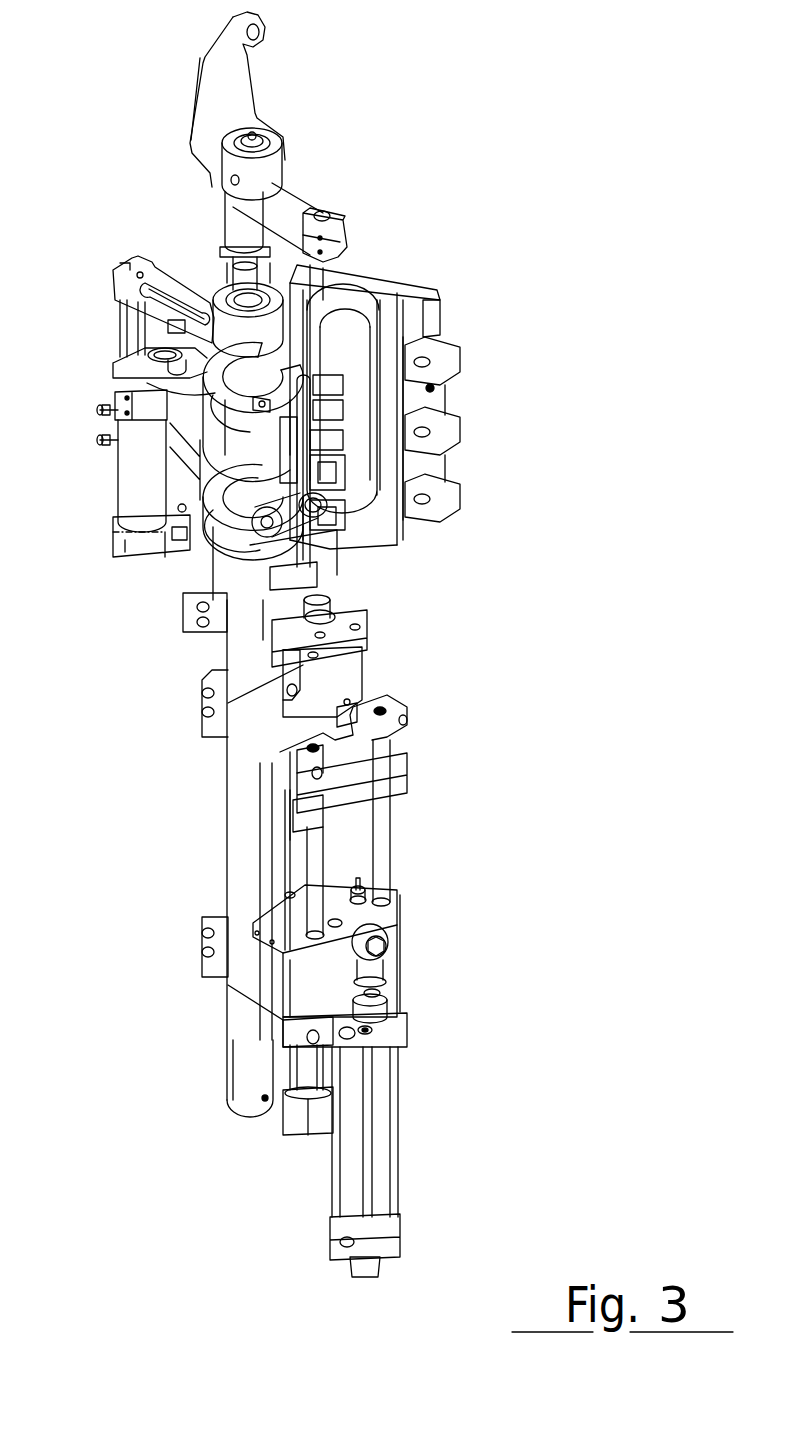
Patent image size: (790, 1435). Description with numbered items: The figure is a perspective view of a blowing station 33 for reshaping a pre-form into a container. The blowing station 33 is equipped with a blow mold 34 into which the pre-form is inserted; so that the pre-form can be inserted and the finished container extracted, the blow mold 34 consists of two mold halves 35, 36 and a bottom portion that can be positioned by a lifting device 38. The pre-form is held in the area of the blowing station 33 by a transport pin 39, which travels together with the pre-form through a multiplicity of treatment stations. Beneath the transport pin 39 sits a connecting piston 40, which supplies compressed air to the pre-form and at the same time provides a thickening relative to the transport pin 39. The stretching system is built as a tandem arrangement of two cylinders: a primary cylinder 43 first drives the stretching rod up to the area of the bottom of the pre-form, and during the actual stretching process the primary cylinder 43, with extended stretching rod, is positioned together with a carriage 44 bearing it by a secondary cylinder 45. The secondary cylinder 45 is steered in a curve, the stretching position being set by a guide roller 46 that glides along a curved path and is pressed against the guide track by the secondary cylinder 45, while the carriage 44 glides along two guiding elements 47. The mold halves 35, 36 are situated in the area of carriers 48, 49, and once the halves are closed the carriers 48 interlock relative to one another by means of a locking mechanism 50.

The blowing station 33 is at (418, 282).
The blow mold 34 is at (367, 293).
The mold half 35 is at (387, 528).
The mold half 36 is at (207, 293).
The lifting device 38 is at (287, 193).
The transport pin 39 is at (360, 615).
The connecting piston 40 is at (350, 673).
The primary cylinder 43 is at (293, 1127).
The carriage 44 is at (392, 967).
The secondary cylinder 45 is at (385, 1122).
The guide roller 46 is at (383, 937).
The guiding elements 47 is at (382, 830).
The carrier 48 is at (453, 480).
The carrier 49 is at (215, 555).
The locking mechanism 50 is at (325, 388).